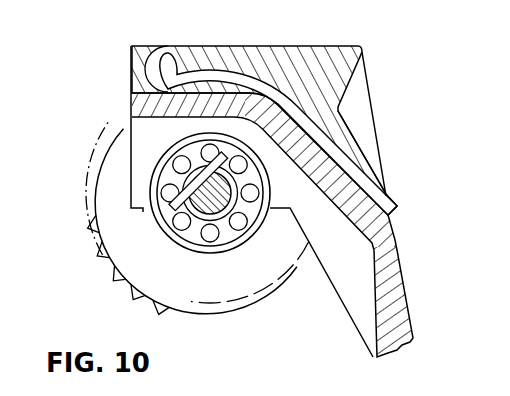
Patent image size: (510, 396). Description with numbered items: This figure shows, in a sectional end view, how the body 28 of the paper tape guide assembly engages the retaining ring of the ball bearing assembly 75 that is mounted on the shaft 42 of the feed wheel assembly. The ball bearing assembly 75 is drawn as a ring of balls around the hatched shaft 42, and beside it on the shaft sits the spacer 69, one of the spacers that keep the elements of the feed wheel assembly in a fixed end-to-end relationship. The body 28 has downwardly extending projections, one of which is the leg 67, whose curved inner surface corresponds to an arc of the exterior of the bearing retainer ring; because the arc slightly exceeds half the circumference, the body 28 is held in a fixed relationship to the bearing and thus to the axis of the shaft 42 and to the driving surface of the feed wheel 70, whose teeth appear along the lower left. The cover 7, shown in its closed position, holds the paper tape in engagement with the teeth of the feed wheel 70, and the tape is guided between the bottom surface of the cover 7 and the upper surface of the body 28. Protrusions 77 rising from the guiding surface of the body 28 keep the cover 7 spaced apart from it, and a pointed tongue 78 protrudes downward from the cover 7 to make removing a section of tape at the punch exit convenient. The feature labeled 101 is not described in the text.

The cover 7 is at (352, 45).
The body 28 is at (407, 293).
The shaft 42 is at (164, 204).
The downwardly extending projection 67 is at (141, 211).
The spacer 69 is at (216, 226).
The feed wheel 70 is at (133, 280).
The ball bearing assembly 75 is at (158, 158).
The protrusions 77 is at (322, 138).
The pointed tongue 78 is at (386, 195).
The strip end 101 is at (386, 217).